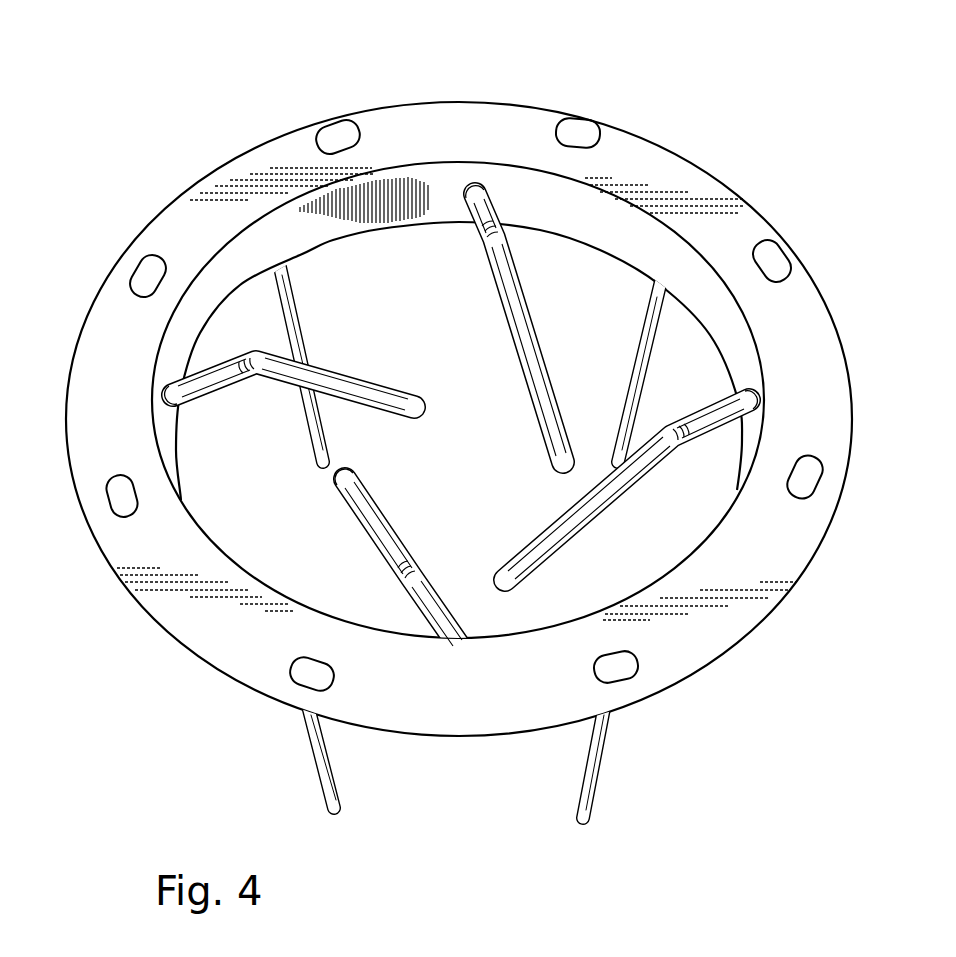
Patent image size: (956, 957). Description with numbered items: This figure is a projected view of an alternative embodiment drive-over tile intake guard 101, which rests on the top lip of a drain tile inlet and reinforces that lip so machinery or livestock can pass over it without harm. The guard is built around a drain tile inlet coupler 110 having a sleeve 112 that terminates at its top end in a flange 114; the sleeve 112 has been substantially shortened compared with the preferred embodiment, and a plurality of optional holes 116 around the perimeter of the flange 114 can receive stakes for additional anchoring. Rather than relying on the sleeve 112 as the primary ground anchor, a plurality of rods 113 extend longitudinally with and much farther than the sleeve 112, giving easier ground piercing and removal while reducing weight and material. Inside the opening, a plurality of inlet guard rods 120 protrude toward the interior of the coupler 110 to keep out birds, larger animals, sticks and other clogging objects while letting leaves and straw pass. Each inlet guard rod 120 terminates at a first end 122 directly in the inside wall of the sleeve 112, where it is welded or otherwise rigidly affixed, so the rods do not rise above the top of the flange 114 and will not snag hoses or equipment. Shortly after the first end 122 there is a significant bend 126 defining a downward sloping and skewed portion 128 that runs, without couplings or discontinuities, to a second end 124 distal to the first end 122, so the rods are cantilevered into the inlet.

The drive-over tile intake guard 101 is at (152, 68).
The drain tile inlet coupler 110 is at (660, 746).
The sleeve 112 is at (333, 238).
The rods 113 is at (305, 328).
The flange 114 is at (665, 167).
The holes 116 is at (586, 127).
The inlet guard rods 120 is at (456, 199).
The first end 122 is at (489, 210).
The second end 124 is at (550, 470).
The bend 126 is at (482, 232).
The downward sloping and skewed portion 128 is at (388, 388).